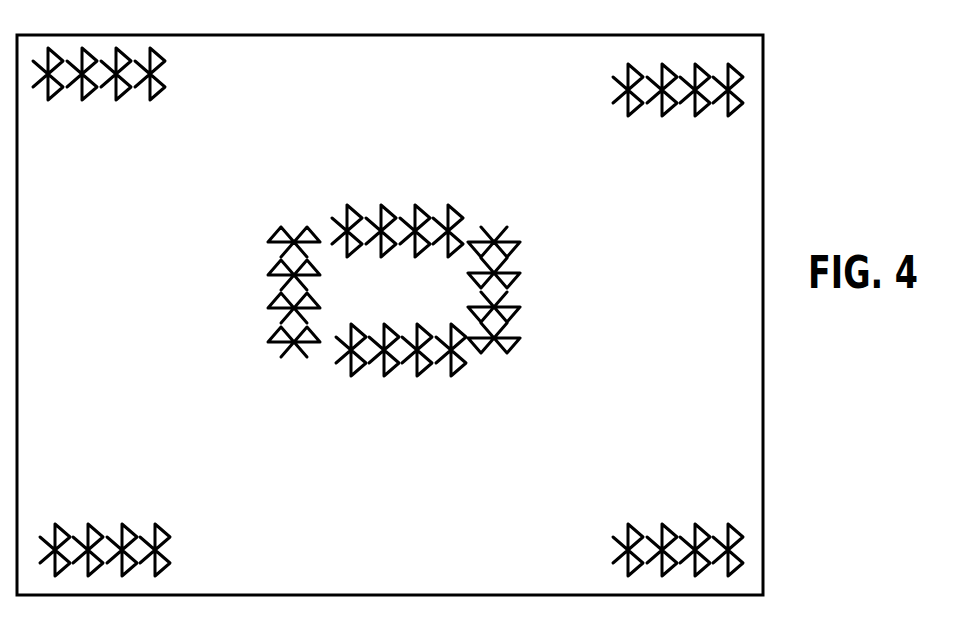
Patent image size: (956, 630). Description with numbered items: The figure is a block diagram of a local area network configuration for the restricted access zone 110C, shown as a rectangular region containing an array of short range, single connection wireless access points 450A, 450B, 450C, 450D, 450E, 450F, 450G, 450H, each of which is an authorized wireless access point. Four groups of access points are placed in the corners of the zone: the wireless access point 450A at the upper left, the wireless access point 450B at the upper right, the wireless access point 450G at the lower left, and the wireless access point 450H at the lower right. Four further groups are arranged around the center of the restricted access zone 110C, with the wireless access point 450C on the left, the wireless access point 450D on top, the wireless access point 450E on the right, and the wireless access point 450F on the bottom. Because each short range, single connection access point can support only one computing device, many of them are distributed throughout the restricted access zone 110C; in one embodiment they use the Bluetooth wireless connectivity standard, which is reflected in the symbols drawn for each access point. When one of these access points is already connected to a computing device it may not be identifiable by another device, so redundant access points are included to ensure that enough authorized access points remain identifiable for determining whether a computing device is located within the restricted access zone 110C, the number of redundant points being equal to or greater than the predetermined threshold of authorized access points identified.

The restricted access zone 110C is at (390, 315).
The wireless access point 450A is at (97, 102).
The wireless access point 450B is at (677, 120).
The wireless access point 450C is at (268, 292).
The wireless access point 450D is at (397, 205).
The wireless access point 450E is at (522, 288).
The wireless access point 450F is at (399, 378).
The wireless access point 450G is at (102, 522).
The wireless access point 450H is at (677, 522).